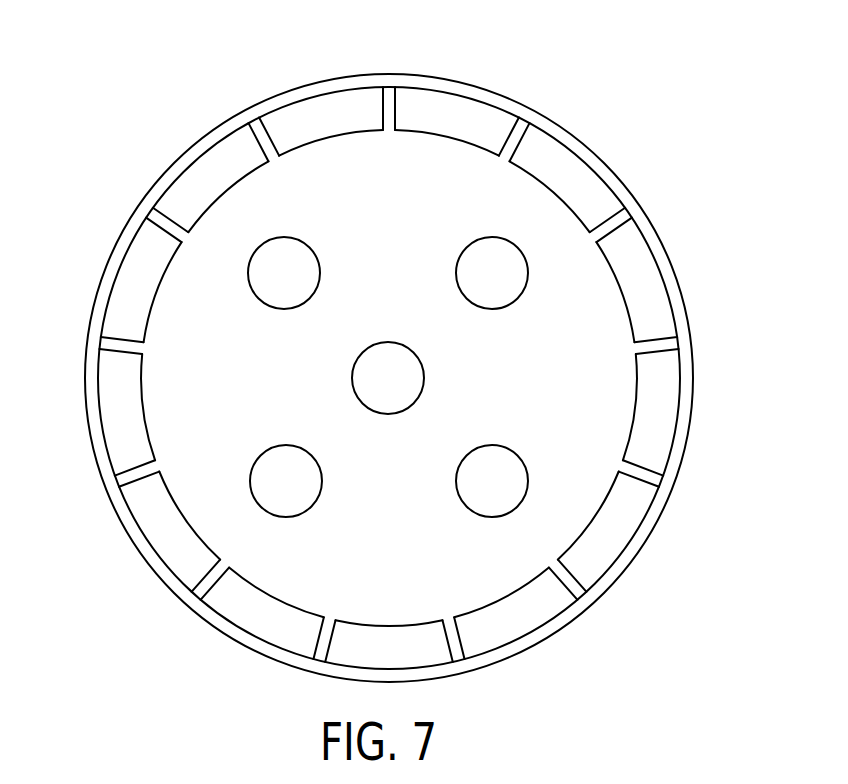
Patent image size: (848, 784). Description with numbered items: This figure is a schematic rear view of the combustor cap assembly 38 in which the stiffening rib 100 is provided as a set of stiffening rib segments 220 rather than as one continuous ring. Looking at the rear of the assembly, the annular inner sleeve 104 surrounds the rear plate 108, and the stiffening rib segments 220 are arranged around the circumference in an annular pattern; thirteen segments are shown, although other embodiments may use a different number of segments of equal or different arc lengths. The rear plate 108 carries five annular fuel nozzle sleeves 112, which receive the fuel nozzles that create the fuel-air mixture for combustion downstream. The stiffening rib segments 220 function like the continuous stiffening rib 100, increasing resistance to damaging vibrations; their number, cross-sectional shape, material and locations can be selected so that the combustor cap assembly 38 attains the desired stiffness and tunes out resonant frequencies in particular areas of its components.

The combustor cap assembly 38 is at (420, 348).
The stiffening rib 100 is at (407, 348).
The inner sleeve 104 is at (172, 177).
The rear plate 108 is at (440, 165).
The fuel nozzle sleeves 112 is at (283, 298).
The stiffening rib segments 220 is at (572, 177).